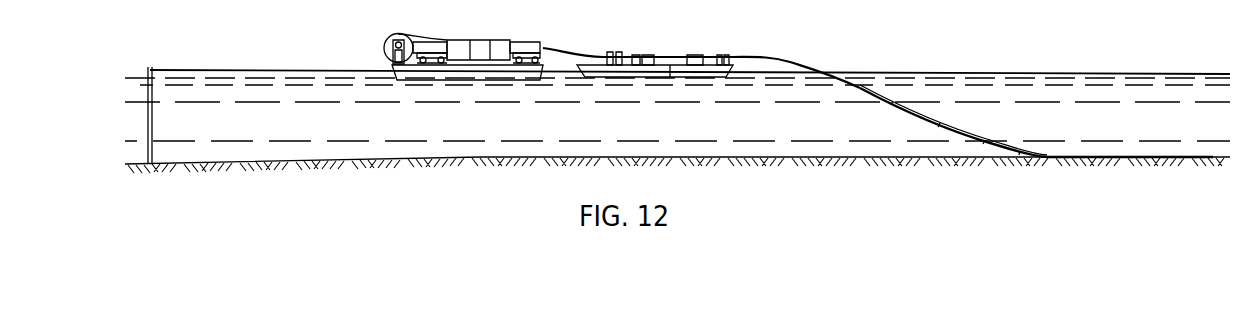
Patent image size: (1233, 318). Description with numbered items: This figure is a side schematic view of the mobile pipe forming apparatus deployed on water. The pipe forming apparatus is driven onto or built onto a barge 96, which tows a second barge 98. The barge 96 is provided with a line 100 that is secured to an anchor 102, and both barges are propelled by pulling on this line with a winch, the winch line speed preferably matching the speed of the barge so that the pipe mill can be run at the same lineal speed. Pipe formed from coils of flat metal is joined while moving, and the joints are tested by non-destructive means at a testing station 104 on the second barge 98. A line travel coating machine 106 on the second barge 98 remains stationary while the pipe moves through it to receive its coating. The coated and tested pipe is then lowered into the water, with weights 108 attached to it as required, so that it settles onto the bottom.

The barge 96 is at (458, 66).
The second barge 98 is at (669, 65).
The line 100 is at (318, 70).
The anchor 102 is at (153, 152).
The testing station 104 is at (646, 53).
The line travel coating machine 106 is at (698, 53).
The weights 108 is at (897, 108).